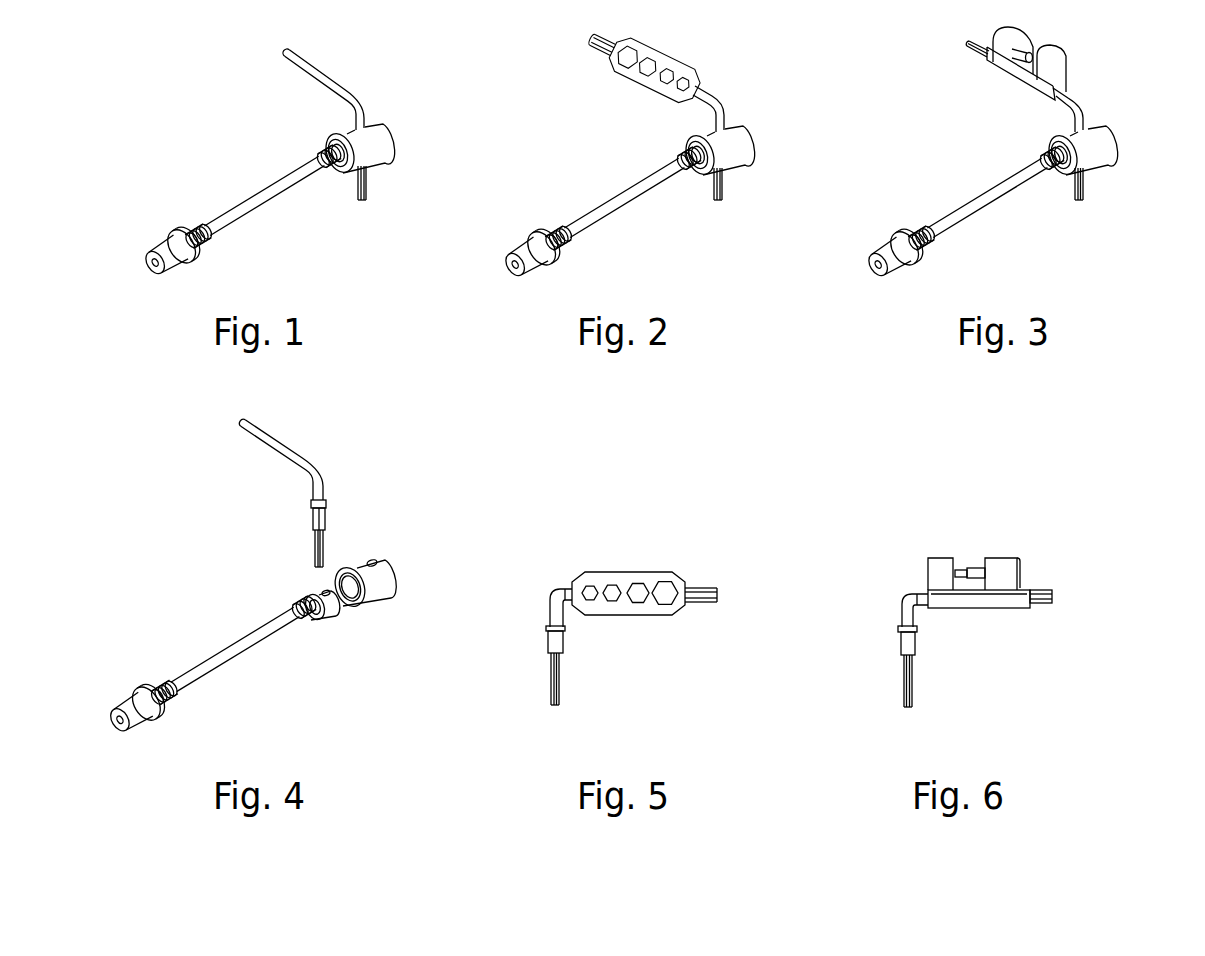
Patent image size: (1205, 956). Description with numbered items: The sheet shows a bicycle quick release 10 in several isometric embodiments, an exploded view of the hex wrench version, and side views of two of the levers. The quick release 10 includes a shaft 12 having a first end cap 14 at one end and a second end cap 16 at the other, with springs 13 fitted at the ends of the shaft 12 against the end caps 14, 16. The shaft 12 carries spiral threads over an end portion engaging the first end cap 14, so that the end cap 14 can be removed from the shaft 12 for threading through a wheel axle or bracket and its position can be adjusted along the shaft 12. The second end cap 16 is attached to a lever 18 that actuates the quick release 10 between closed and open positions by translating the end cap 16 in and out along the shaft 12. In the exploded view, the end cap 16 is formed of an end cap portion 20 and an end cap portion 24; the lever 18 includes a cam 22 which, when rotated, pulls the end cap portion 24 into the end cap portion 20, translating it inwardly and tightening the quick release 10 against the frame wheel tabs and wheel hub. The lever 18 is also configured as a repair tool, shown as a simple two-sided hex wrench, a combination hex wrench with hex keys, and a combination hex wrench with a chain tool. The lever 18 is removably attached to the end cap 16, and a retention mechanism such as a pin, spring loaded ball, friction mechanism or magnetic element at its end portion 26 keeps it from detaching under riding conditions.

In FIG. 1, the quick release 10 is at (174, 92).
In FIG. 2, the quick release 10 is at (536, 113).
In FIG. 3, the quick release 10 is at (906, 116).
In FIG. 4, the quick release 10 is at (186, 556).
In FIG. 1, the shaft 12 is at (257, 207).
In FIG. 2, the shaft 12 is at (613, 207).
In FIG. 3, the shaft 12 is at (977, 207).
In FIG. 4, the shaft 12 is at (223, 663).
In FIG. 1, the springs 13 is at (200, 230).
In FIG. 2, the springs 13 is at (548, 231).
In FIG. 3, the springs 13 is at (913, 230).
In FIG. 4, the springs 13 is at (155, 685).
In FIG. 1, the first end cap 14 is at (163, 233).
In FIG. 2, the first end cap 14 is at (533, 270).
In FIG. 3, the first end cap 14 is at (897, 263).
In FIG. 4, the first end cap 14 is at (143, 730).
In FIG. 1, the second end cap 16 is at (383, 143).
In FIG. 2, the second end cap 16 is at (740, 133).
In FIG. 3, the second end cap 16 is at (1103, 133).
In FIG. 1, the lever 18 is at (320, 70).
In FIG. 2, the lever 18 is at (717, 98).
In FIG. 3, the lever 18 is at (1087, 98).
In FIG. 4, the lever 18 is at (280, 440).
In FIG. 5, the lever 18 is at (626, 540).
In FIG. 6, the lever 18 is at (979, 520).
In FIG. 4, the end cap portion 20 is at (380, 583).
In FIG. 4, the cam 22 is at (330, 513).
In FIG. 4, the end cap portion 24 is at (327, 623).
In FIG. 1, the end portion 26 is at (367, 197).
In FIG. 2, the end portion 26 is at (727, 183).
In FIG. 3, the end portion 26 is at (1090, 183).
In FIG. 4, the end portion 26 is at (330, 553).
In FIG. 5, the end portion 26 is at (560, 682).
In FIG. 6, the end portion 26 is at (913, 687).